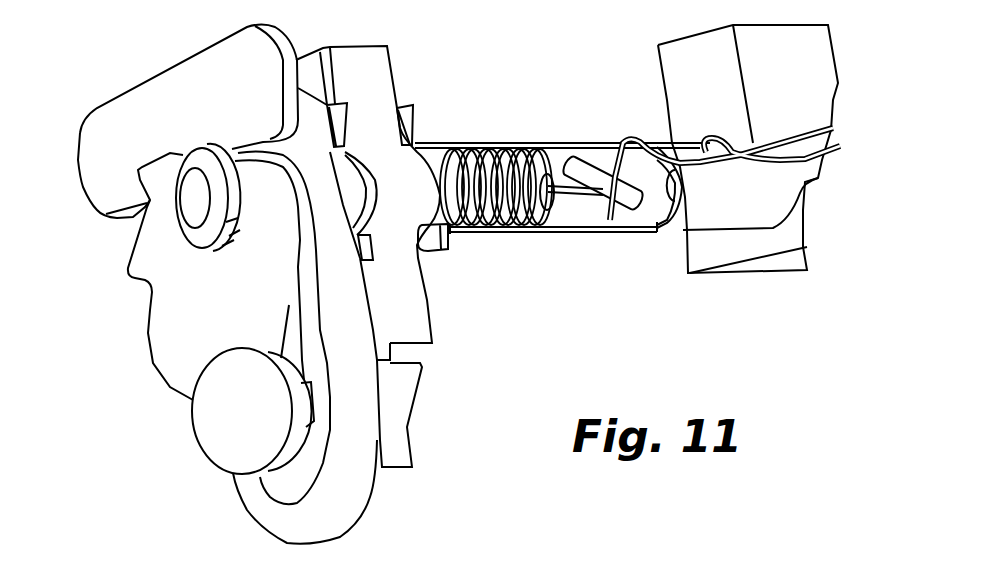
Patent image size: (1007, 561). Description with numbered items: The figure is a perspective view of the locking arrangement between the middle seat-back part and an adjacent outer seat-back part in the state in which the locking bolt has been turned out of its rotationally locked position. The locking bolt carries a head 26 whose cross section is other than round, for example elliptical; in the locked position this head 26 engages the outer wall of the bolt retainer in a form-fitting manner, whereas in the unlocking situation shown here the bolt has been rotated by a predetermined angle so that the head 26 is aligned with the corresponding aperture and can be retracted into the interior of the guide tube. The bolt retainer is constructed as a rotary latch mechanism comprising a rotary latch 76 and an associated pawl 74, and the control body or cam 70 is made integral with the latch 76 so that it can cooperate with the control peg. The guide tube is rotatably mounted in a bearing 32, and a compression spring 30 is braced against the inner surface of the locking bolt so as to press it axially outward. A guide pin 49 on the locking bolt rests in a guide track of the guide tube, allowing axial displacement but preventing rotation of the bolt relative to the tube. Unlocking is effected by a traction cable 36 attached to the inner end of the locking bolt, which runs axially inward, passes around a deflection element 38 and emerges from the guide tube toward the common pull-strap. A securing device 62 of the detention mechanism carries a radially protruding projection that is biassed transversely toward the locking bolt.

The pawl 74 is at (203, 88).
The bearing 32 is at (368, 73).
The head 26 is at (205, 232).
The rotary latch 76 is at (217, 330).
The control body or cam 70 is at (250, 418).
The securing device 62 is at (400, 374).
The guide pin 49 is at (447, 242).
The compression spring 30 is at (500, 217).
The deflection element 38 is at (601, 208).
The traction cable 36 is at (680, 230).